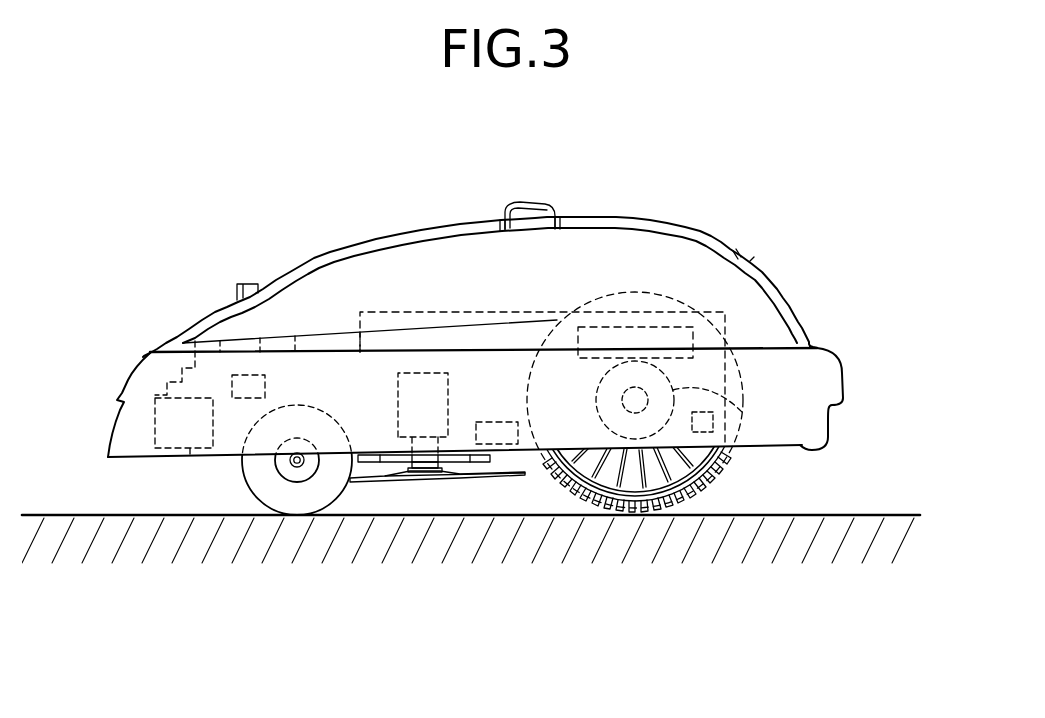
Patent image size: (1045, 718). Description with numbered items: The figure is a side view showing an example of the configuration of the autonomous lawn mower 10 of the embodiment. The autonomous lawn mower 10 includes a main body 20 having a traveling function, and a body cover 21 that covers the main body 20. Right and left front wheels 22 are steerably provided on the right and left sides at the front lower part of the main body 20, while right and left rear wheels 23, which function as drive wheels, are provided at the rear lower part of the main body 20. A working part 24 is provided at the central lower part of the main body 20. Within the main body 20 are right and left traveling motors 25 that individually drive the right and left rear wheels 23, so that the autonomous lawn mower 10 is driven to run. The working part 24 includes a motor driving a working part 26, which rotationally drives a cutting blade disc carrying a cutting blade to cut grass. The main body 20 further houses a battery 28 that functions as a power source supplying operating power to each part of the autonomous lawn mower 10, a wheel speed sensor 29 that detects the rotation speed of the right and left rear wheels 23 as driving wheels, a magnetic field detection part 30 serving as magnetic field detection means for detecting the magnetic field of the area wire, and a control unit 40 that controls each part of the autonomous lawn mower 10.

The autonomous lawn mower 10 is at (170, 199).
The main body 20 is at (400, 312).
The body cover 21 is at (161, 330).
The front wheel 22 is at (318, 494).
The rear wheel 23 is at (673, 490).
The working part 24 is at (494, 508).
The traveling motor 25 is at (713, 425).
The motor driving a working part 26 is at (398, 408).
The battery 28 is at (484, 422).
The wheel speed sensor 29 is at (743, 410).
The magnetic field detection part 30 is at (267, 383).
The control unit 40 is at (722, 332).